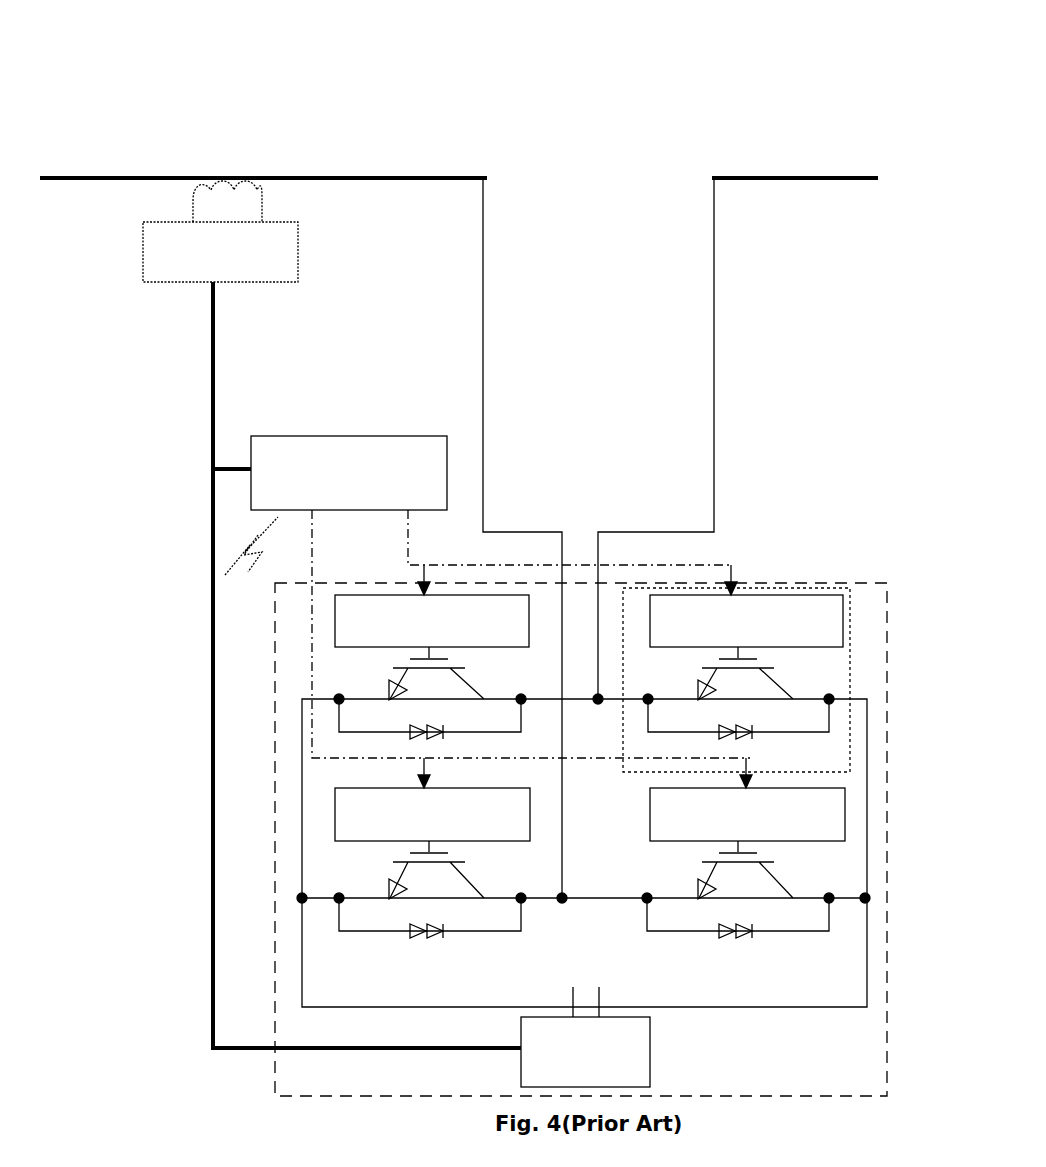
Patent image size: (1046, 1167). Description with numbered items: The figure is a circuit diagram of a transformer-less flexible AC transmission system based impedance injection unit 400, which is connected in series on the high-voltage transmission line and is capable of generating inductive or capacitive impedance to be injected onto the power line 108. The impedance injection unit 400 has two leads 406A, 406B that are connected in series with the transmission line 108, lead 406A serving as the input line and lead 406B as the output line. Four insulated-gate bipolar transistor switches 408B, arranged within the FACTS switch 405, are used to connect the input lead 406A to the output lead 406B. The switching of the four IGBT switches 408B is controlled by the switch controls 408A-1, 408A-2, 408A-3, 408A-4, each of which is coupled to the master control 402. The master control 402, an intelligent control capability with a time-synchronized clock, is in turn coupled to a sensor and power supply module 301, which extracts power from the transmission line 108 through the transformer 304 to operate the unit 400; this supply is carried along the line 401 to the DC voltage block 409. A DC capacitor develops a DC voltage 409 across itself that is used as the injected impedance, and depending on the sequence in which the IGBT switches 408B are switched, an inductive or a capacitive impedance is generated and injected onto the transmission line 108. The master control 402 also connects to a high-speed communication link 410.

The impedance injection unit 400 is at (480, 65).
The power line 108 is at (795, 178).
The transformer 304 is at (246, 180).
The sensor and power supply module 301 is at (185, 221).
The impedance generation and injection module 401 is at (275, 893).
The master control 402 is at (500, 597).
The high-speed communication link 410 is at (253, 546).
The lead 406A is at (483, 292).
The lead 406B is at (633, 340).
The FACTs switch 405 is at (782, 582).
The switch control 408A-1 is at (431, 652).
The switch control 408A-2 is at (743, 848).
The switch control 408A-3 is at (432, 848).
The switch control 408A-4 is at (743, 652).
The IGBT switch 408B is at (770, 855).
The DC voltage source 409 is at (650, 1065).